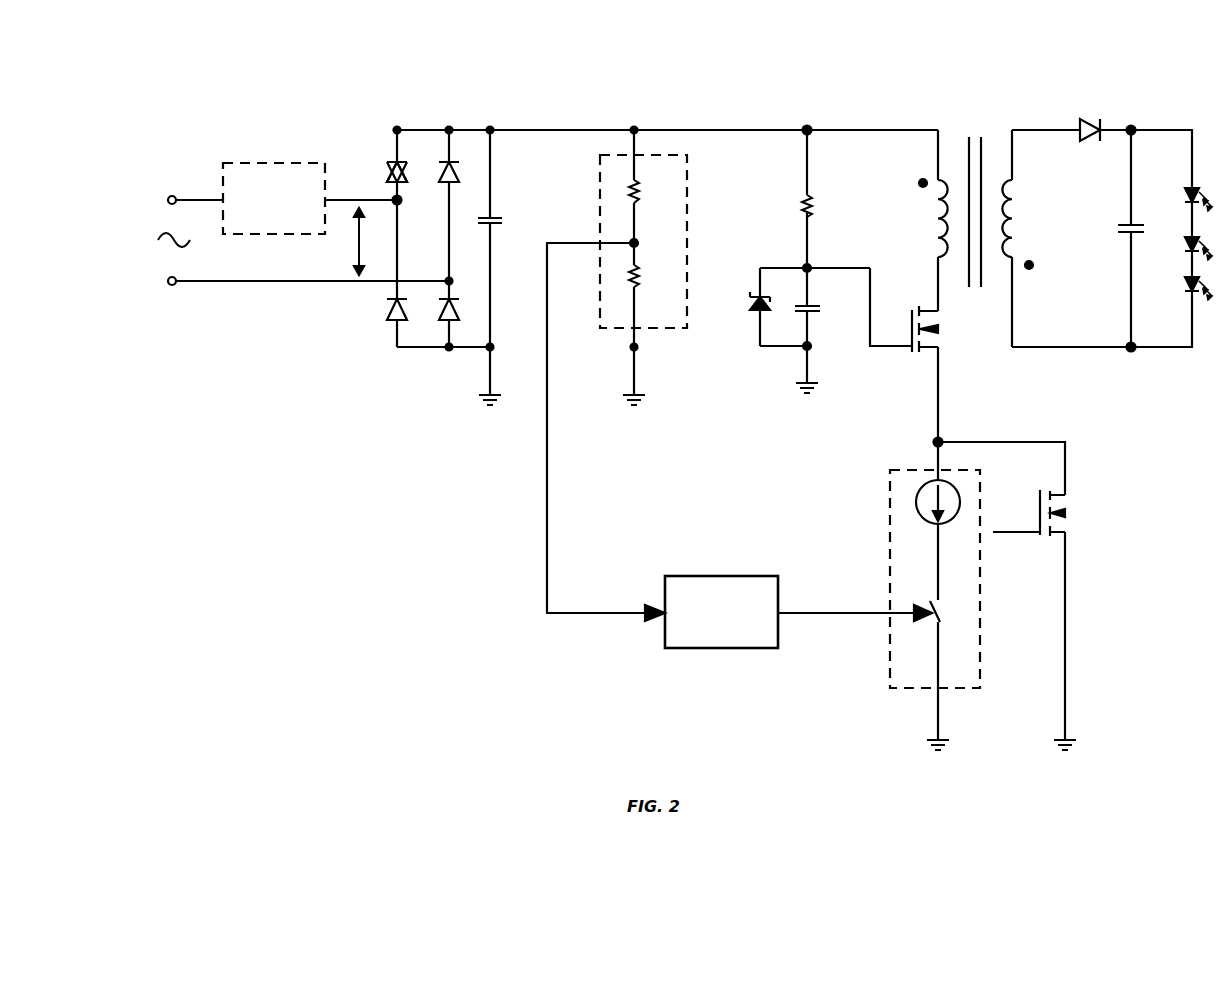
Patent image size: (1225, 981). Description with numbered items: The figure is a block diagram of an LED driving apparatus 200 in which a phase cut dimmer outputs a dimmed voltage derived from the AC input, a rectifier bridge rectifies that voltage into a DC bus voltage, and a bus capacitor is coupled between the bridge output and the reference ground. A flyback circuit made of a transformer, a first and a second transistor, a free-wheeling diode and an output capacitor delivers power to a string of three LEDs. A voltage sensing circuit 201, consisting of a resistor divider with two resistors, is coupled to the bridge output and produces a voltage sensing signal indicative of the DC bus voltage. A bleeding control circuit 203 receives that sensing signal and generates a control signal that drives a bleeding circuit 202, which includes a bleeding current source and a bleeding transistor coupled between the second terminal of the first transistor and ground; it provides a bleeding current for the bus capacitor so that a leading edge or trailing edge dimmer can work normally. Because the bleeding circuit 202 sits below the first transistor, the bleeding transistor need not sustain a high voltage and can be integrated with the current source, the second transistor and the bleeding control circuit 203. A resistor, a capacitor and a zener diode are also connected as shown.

The LED driving apparatus 200 is at (1195, 43).
The voltage sensing circuit 201 is at (655, 330).
The bleeding circuit 202 is at (912, 690).
The bleeding control circuit 203 is at (677, 650).